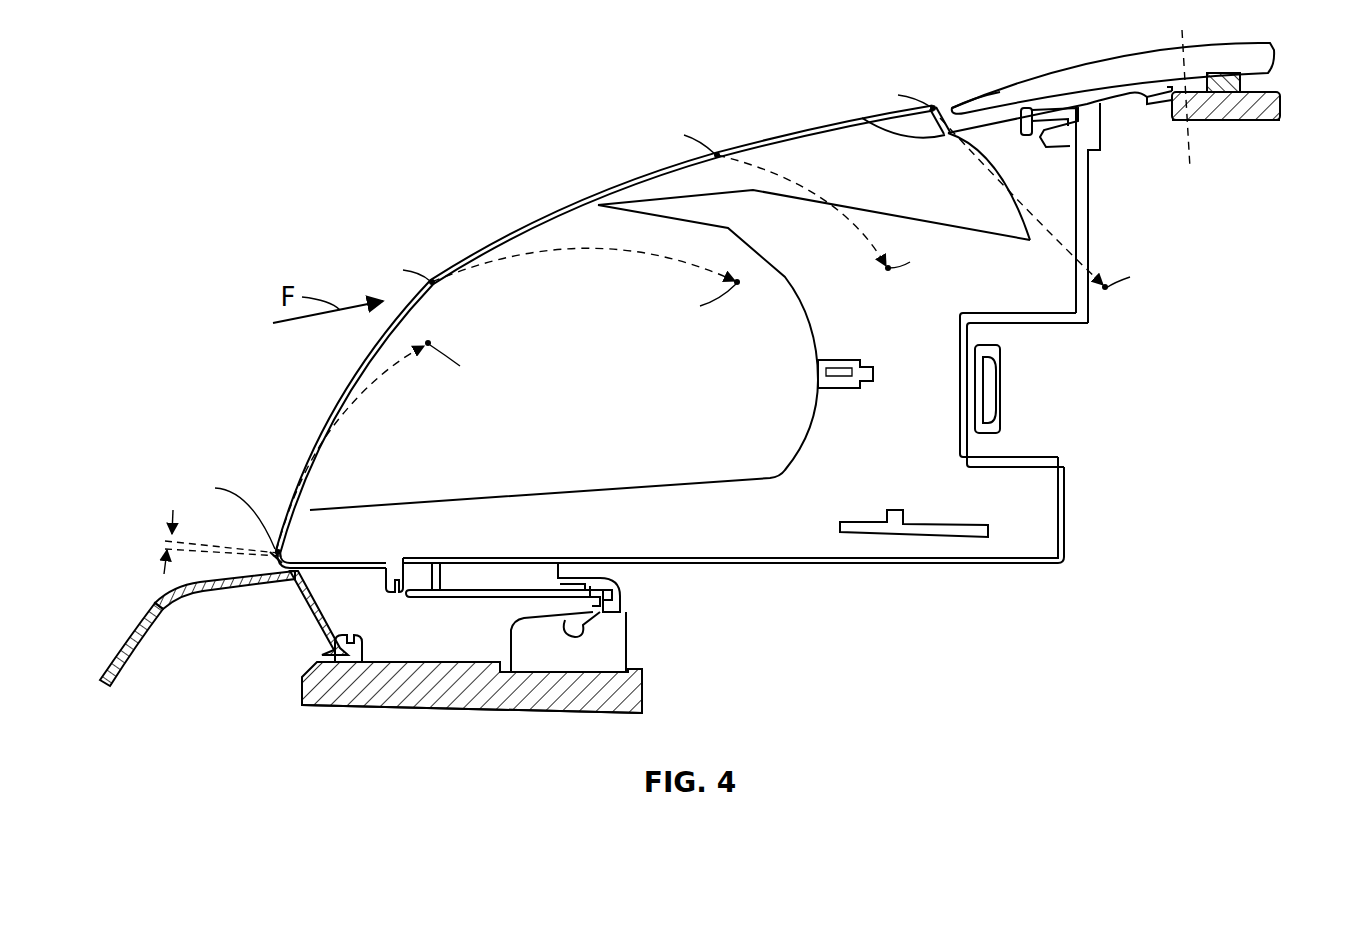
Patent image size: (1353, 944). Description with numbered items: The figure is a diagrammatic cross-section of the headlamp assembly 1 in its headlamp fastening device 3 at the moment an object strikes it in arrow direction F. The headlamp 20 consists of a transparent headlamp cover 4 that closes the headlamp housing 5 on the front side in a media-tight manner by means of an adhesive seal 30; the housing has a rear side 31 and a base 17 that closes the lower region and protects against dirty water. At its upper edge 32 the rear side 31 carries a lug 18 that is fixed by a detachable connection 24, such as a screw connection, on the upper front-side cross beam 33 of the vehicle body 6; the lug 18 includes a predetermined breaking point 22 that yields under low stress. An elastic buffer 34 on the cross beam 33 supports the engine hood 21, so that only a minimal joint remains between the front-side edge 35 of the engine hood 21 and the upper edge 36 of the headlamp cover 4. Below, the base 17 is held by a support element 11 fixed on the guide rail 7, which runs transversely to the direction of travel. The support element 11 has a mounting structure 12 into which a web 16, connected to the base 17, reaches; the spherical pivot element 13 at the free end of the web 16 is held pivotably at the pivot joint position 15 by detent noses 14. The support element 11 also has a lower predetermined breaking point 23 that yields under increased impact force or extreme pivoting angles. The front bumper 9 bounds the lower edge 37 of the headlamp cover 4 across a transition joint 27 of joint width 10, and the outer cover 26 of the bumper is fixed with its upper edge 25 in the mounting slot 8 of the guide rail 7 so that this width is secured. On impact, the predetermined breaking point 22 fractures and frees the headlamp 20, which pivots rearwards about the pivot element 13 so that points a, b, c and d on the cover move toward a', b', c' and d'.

The headlamp assembly 1 is at (1096, 375).
The headlamp fastening device 3 is at (1238, 172).
The transparent headlamp cover 4 is at (490, 246).
The headlamp housing 5 is at (969, 564).
The vehicle body 6 is at (1284, 106).
The guide rail 7 is at (425, 706).
The mounting slot 8 is at (342, 645).
The front bumper 9 is at (156, 594).
The joint width 10 is at (152, 538).
The support element 11 is at (521, 658).
The mounting structure 12 is at (621, 590).
The spherical pivot element 13 is at (614, 620).
The detent noses 14 is at (592, 580).
The pivot joint position 15 is at (581, 578).
The web 16 is at (500, 598).
The base 17 is at (806, 566).
The lug 18 is at (1150, 102).
The headlamp 20 is at (528, 216).
The engine hood 21 is at (1050, 72).
The predetermined breaking point 22 is at (1133, 92).
The lower predetermined breaking point 23 is at (627, 600).
The detachable connection 24 is at (1192, 128).
The upper edge 25 is at (302, 588).
The outer cover 26 is at (118, 640).
The transition joint 27 is at (270, 556).
The adhesive seal 30 is at (1040, 150).
The rear side 31 is at (1038, 460).
The upper edge 32 is at (1101, 132).
The cross beam 33 is at (1262, 115).
The elastic buffer 34 is at (1232, 84).
The edge 35 is at (975, 97).
The upper edge 36 is at (928, 128).
The lower edge 37 is at (290, 552).